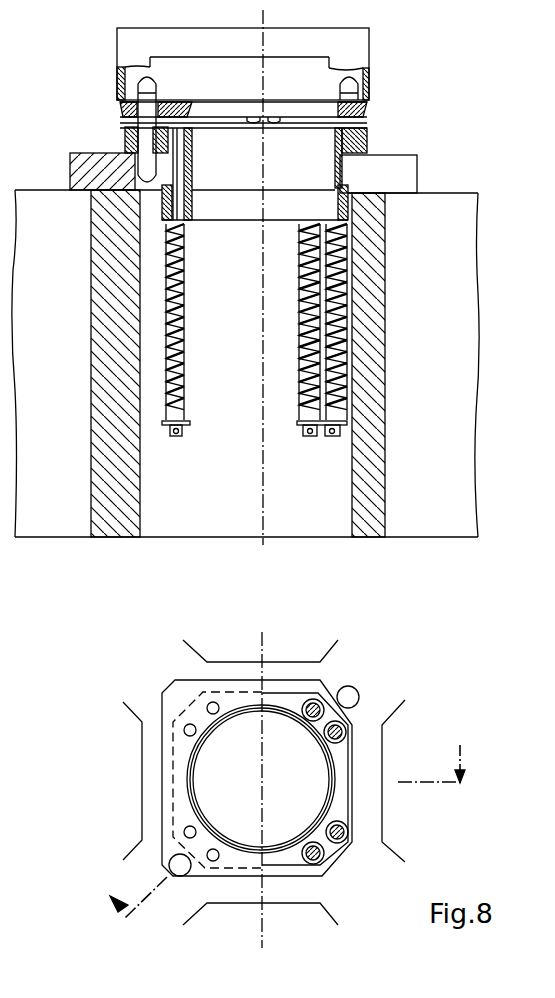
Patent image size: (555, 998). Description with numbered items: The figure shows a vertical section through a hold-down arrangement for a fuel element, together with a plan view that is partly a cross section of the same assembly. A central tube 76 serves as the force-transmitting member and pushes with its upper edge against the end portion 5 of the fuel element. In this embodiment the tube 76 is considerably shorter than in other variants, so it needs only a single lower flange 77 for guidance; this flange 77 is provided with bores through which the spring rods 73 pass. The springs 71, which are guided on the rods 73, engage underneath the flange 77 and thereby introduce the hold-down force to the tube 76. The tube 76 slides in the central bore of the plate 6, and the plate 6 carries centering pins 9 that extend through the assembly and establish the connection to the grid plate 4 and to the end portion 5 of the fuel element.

The grid plate 4 is at (457, 513).
The end portion of fuel element 5 is at (350, 40).
The plate 6 is at (125, 133).
The centering pin 9 is at (147, 143).
The spring 71 is at (185, 371).
The spring rod 73 is at (180, 256).
The tube 76 is at (367, 136).
The lower flange 77 is at (163, 205).